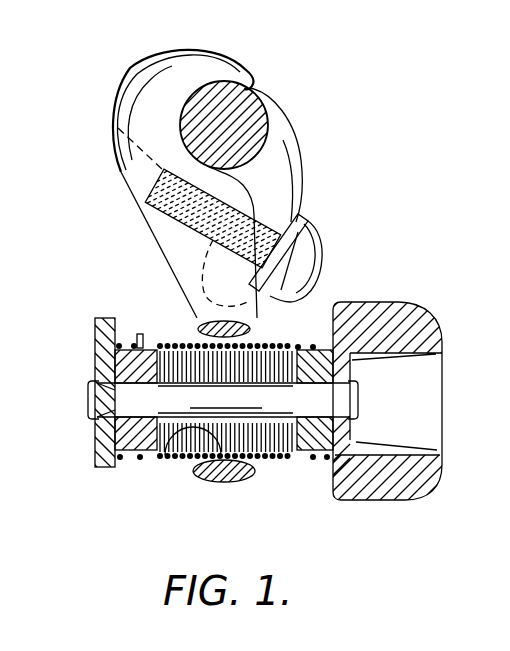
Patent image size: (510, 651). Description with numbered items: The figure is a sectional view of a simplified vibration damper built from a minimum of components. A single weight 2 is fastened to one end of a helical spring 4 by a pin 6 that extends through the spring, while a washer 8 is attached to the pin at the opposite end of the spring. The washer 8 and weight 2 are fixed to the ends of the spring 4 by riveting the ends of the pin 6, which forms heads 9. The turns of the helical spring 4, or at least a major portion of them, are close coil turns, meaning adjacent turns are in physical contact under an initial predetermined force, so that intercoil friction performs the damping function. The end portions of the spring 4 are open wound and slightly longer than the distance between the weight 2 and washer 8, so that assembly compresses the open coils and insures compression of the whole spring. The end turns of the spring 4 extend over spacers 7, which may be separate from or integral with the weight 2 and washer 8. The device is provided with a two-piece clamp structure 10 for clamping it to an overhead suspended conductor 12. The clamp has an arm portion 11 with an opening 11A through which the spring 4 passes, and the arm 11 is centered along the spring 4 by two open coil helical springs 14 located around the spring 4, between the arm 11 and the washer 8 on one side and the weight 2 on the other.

The weight 2 is at (394, 303).
The helical spring 4 is at (292, 346).
The pin 6 is at (267, 404).
The spacers 7 is at (127, 362).
The washer 8 is at (95, 348).
The heads 9 is at (92, 415).
The two-piece clamp structure 10 is at (252, 82).
The arm portion 11 is at (243, 483).
The opening 11A is at (158, 463).
The overhead suspended conductor 12 is at (255, 107).
The open coil helical springs 14 is at (140, 345).